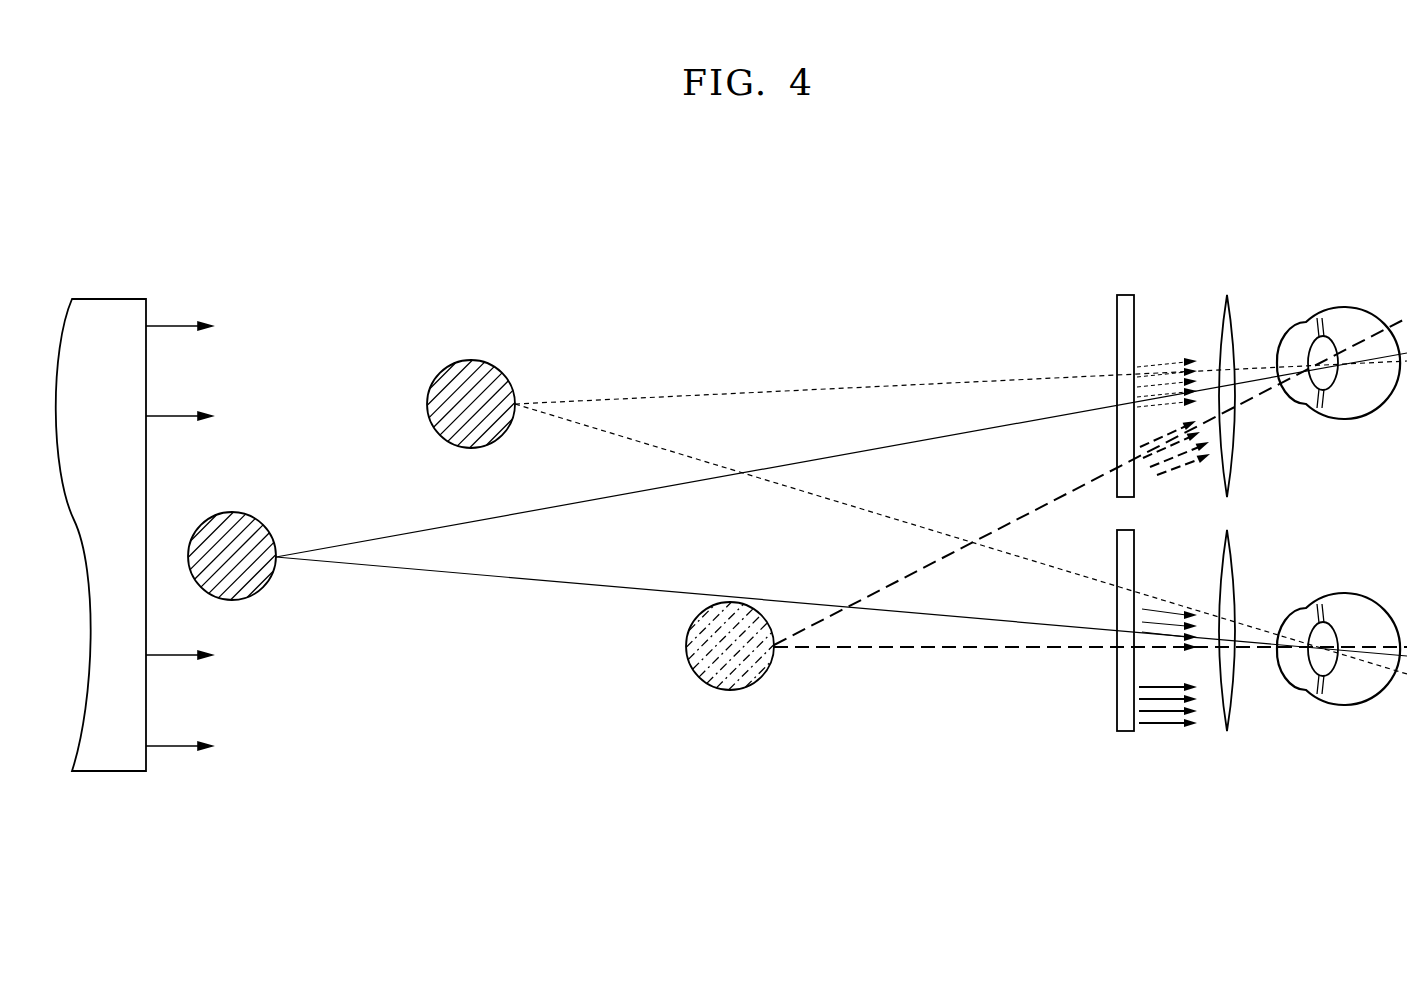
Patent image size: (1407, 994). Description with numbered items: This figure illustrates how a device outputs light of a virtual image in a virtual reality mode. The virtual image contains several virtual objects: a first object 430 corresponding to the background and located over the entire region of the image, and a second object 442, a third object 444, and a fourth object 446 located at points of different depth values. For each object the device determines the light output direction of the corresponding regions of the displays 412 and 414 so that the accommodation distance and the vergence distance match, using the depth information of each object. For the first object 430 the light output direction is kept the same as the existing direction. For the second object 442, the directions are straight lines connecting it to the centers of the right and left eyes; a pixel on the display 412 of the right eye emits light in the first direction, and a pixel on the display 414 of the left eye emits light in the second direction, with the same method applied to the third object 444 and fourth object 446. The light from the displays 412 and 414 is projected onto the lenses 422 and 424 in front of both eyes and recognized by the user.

The first object 430 is at (109, 299).
The second object 442 is at (474, 360).
The third object 444 is at (236, 512).
The fourth object 446 is at (731, 690).
The display 412 is at (1126, 295).
The display 414 is at (1125, 731).
The lens 422 is at (1228, 295).
The lens 424 is at (1227, 731).